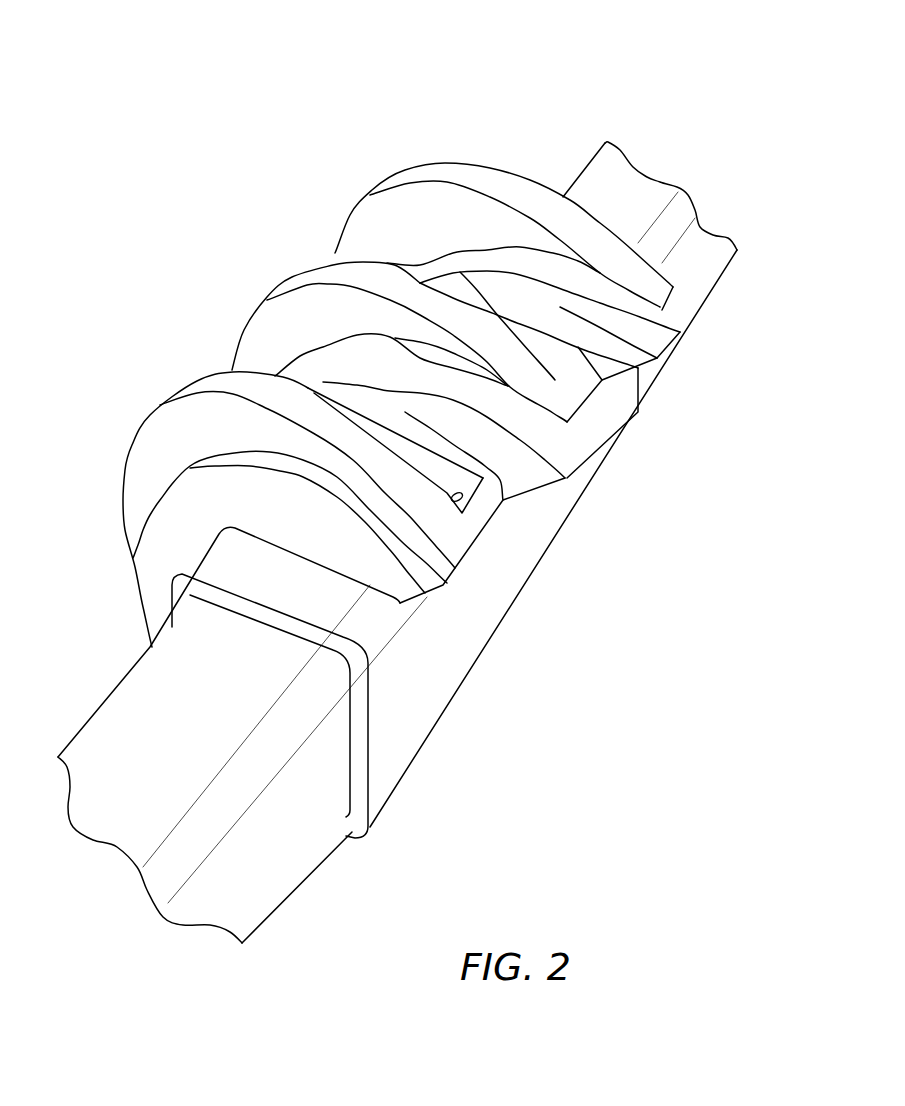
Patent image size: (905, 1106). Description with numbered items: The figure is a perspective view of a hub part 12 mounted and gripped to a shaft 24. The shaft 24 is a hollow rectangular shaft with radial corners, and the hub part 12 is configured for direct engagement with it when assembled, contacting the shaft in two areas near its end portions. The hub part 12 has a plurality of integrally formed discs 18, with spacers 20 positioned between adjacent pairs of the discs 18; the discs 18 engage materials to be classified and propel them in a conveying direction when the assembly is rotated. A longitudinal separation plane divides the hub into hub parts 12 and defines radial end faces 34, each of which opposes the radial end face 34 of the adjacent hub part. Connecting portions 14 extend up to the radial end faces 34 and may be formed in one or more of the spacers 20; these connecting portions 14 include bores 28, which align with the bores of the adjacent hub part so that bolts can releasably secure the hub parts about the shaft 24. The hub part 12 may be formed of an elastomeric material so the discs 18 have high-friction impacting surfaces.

The hub part 12 is at (273, 511).
The connecting portion 14 is at (485, 507).
The disc 18 is at (517, 193).
The spacer 20 is at (183, 473).
The shaft 24 is at (413, 700).
The bore 28 is at (308, 388).
The radial end face 34 is at (662, 333).